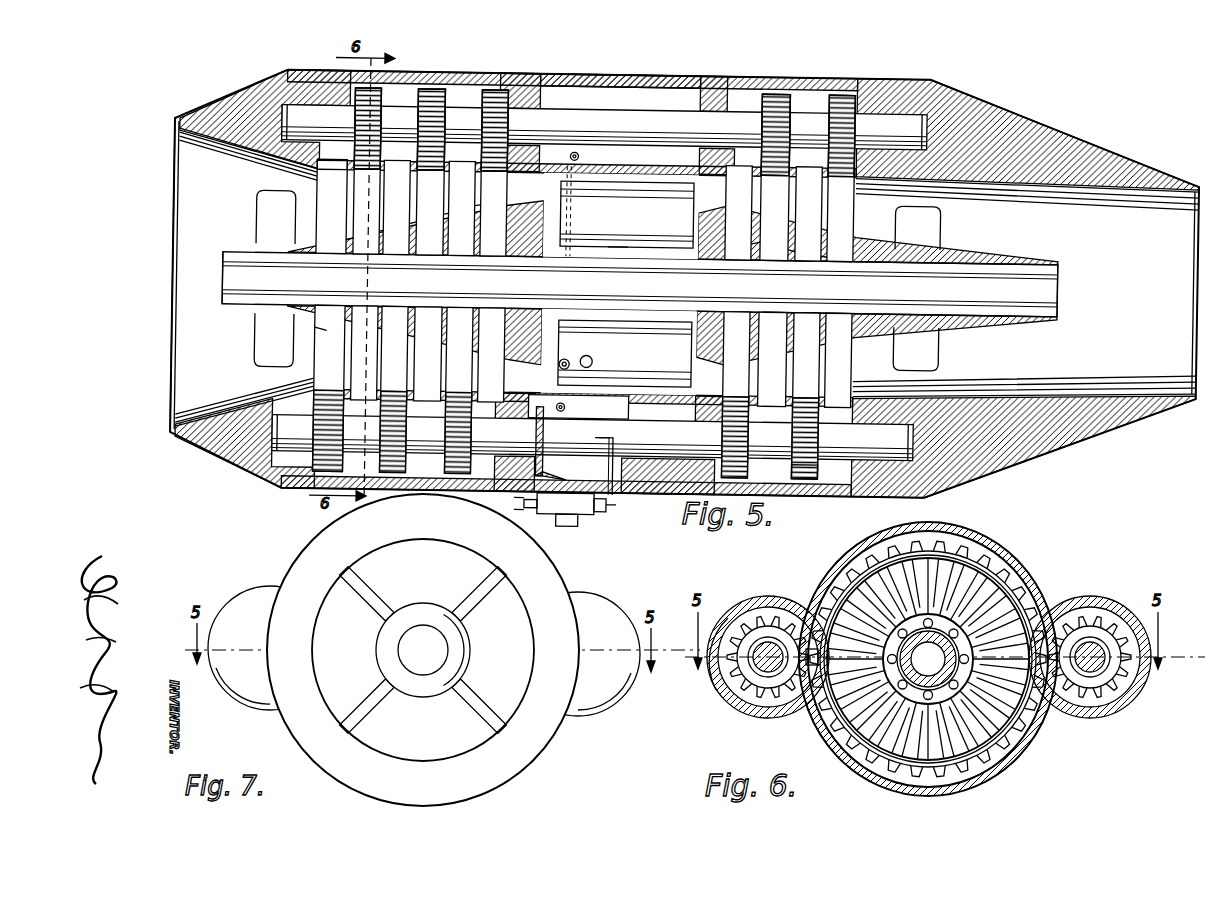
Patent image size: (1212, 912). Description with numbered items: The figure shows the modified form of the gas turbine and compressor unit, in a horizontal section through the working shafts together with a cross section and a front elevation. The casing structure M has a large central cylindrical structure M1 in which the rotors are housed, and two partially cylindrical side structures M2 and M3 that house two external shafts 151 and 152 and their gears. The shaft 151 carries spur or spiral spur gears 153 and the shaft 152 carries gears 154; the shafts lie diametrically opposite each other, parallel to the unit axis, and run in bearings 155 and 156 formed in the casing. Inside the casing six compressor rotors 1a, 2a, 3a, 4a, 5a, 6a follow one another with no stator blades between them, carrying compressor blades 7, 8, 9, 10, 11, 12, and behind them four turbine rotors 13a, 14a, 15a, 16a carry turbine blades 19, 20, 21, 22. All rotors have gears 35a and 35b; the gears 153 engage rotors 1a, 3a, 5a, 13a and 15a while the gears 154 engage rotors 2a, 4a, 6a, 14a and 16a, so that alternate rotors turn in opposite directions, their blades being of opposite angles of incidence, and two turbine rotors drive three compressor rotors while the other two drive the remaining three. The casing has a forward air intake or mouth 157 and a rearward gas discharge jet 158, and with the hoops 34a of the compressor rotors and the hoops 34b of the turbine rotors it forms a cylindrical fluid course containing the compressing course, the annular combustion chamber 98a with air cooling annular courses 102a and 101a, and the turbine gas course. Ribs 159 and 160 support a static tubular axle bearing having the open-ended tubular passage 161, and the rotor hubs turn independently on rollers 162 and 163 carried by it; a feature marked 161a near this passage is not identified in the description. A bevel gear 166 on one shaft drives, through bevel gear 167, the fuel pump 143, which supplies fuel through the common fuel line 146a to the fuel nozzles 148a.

In FIG. 5, the casing structure M is at (178, 118).
In FIG. 7, the casing structure M is at (310, 592).
In FIG. 5, the large central cylindrical structure M1 is at (664, 72).
In FIG. 6, the large central cylindrical structure M1 is at (1020, 580).
In FIG. 7, the partially cylindrical structure M2 is at (267, 590).
In FIG. 6, the partially cylindrical structure M2 is at (790, 604).
In FIG. 7, the partially cylindrical structure M3 is at (604, 614).
In FIG. 6, the partially cylindrical structure M3 is at (1084, 608).
In FIG. 5, the compressor rotor 1a is at (330, 328).
In FIG. 5, the compressor rotor 2a is at (351, 248).
In FIG. 5, the compressor rotor 3a is at (410, 272).
In FIG. 5, the compressor rotor 4a is at (440, 240).
In FIG. 5, the compressor rotor 5a is at (495, 246).
In FIG. 5, the compressor rotor 6a is at (505, 243).
In FIG. 5, the compressor blades 7 is at (329, 315).
In FIG. 5, the compressor blades 8 is at (366, 244).
In FIG. 6, the compressor blades 8 is at (968, 748).
In FIG. 5, the compressor blades 9 is at (394, 316).
In FIG. 5, the compressor blades 10 is at (430, 245).
In FIG. 5, the compressor blades 11 is at (459, 317).
In FIG. 5, the compressor blades 12 is at (493, 246).
In FIG. 5, the turbine rotor 13a is at (746, 258).
In FIG. 5, the turbine rotor 14a is at (772, 240).
In FIG. 5, the turbine rotor 15a is at (820, 238).
In FIG. 5, the turbine rotor 16a is at (862, 220).
In FIG. 5, the turbine blades 19 is at (736, 322).
In FIG. 5, the turbine blades 20 is at (774, 250).
In FIG. 5, the turbine blades 21 is at (806, 323).
In FIG. 5, the turbine blades 22 is at (840, 251).
In FIG. 5, the hoops of the compressor rotors 34a is at (322, 162).
In FIG. 6, the hoops of the compressor rotors 34a is at (1000, 754).
In FIG. 5, the hoops of the turbine rotors 34b is at (832, 470).
In FIG. 5, the gears of the compressor rotors 35a is at (455, 160).
In FIG. 6, the gears of the compressor rotors 35a is at (1022, 726).
In FIG. 5, the gears of the turbine rotors 35b is at (805, 160).
In FIG. 5, the annular combustion chamber 98a is at (621, 216).
In FIG. 5, the air cooling annular course 101a is at (630, 397).
In FIG. 5, the air cooling annular course 102a is at (620, 243).
In FIG. 5, the fuel pump 143 is at (598, 502).
In FIG. 5, the annular conduit or common fuel line 146a is at (579, 146).
In FIG. 5, the fuel nozzles 148a is at (606, 362).
In FIG. 5, the shaft 151 is at (920, 440).
In FIG. 6, the shaft 151 is at (1106, 686).
In FIG. 5, the shaft 152 is at (912, 114).
In FIG. 6, the shaft 152 is at (765, 682).
In FIG. 5, the spur or spiral spur gears 153 is at (466, 430).
In FIG. 5, the spur or spiral spur gears 154 is at (500, 117).
In FIG. 6, the spur or spiral spur gears 154 is at (718, 688).
In FIG. 5, the bearings 155 is at (700, 462).
In FIG. 5, the bearings 156 is at (290, 90).
In FIG. 5, the open forward air intake or mouth 157 is at (182, 220).
In FIG. 7, the open forward air intake or mouth 157 is at (446, 744).
In FIG. 5, the rearward gas discharge jet 158 is at (1026, 290).
In FIG. 5, the ribs 159 is at (262, 340).
In FIG. 7, the ribs 159 is at (378, 610).
In FIG. 5, the ribs 160 is at (944, 344).
In FIG. 5, the tubular passage 161 is at (228, 279).
In FIG. 7, the tubular passage 161 is at (422, 635).
In FIG. 5, the shaft collar 161a is at (245, 306).
In FIG. 7, the shaft collar 161a is at (458, 664).
In FIG. 5, the rollers 162 is at (325, 252).
In FIG. 5, the rollers 163 is at (875, 305).
In FIG. 5, the bevel gear 166 is at (550, 433).
In FIG. 5, the bevel gear 167 is at (620, 436).